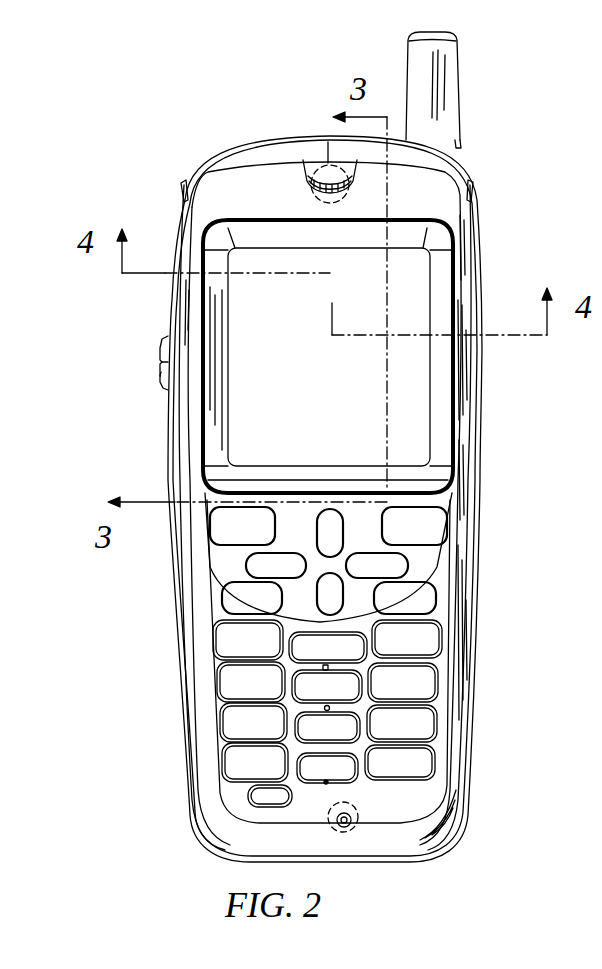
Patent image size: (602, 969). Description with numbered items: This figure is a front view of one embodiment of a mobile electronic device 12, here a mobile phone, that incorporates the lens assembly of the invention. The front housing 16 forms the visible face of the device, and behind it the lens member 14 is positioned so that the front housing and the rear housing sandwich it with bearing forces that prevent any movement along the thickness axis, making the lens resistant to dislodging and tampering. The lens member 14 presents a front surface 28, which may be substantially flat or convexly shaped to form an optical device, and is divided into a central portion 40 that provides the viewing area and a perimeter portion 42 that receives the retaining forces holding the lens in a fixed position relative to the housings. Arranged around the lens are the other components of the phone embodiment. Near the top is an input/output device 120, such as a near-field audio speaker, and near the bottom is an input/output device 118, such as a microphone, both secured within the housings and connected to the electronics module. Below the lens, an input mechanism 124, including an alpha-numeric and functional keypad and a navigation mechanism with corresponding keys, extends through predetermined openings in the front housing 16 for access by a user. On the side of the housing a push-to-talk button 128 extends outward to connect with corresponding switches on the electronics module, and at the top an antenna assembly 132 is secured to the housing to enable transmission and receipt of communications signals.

The mobile electronic device 12 is at (211, 146).
The lens member 14 is at (240, 337).
The front housing 16 is at (175, 428).
The front surface 28 is at (293, 407).
The central portion 40 is at (414, 293).
The perimeter portion 42 is at (450, 433).
The input/output device 118 is at (356, 836).
The input/output device 120 is at (320, 152).
The input mechanism 124 is at (418, 630).
The push-to-talk button 128 is at (162, 372).
The antenna assembly 132 is at (448, 128).